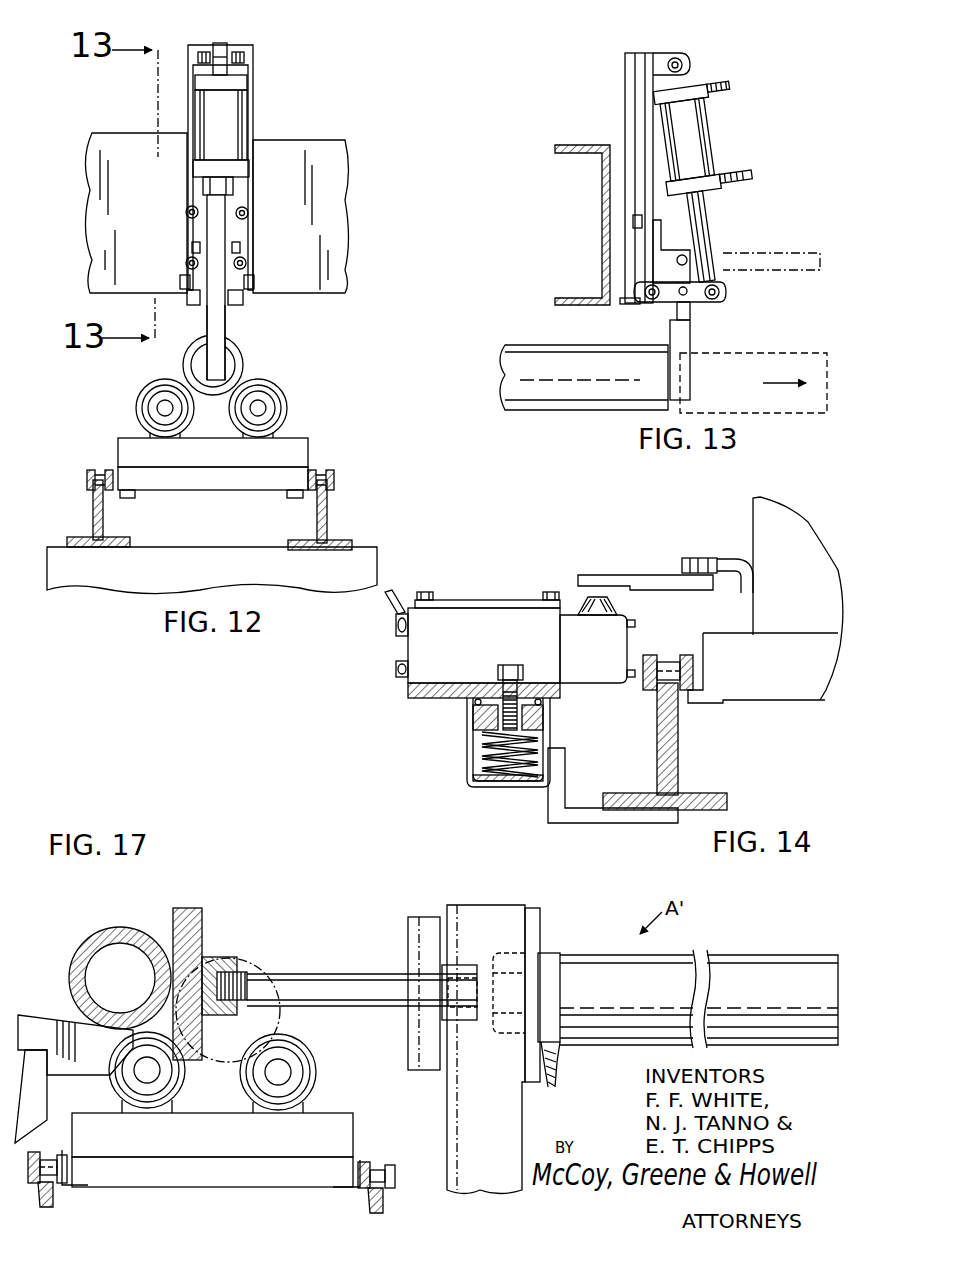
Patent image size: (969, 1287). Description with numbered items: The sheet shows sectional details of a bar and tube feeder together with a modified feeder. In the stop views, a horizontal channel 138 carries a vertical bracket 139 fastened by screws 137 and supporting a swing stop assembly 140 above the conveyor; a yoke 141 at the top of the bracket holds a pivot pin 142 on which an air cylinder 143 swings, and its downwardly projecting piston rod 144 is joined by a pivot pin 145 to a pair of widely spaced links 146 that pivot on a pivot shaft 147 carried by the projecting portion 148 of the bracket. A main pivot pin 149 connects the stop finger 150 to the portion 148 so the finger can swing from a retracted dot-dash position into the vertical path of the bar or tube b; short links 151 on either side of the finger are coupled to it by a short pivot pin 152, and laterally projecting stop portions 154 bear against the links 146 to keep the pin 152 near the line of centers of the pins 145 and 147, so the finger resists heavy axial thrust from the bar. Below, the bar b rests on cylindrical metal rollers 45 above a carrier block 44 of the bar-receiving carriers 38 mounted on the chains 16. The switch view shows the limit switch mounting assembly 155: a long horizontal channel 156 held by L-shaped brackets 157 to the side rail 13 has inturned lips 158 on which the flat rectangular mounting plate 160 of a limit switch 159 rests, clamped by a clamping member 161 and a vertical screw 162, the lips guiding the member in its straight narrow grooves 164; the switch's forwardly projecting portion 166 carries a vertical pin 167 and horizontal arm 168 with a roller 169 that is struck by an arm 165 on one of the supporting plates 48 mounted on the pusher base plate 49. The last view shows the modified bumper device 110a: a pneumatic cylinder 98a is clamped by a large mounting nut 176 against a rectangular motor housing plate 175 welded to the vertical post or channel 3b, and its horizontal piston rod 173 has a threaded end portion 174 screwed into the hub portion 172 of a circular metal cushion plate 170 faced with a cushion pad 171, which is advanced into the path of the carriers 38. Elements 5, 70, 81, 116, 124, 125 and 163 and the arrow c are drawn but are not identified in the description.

In FIG. 12, the base 5 is at (179, 548).
In FIG. 12, the side rail 13 is at (93, 520).
In FIG. 14, the side rail 13 is at (679, 760).
In FIG. 17, the side rail 13 is at (54, 1200).
In FIG. 12, the chain 16 is at (327, 480).
In FIG. 14, the chain 16 is at (643, 691).
In FIG. 17, the chain 16 is at (58, 1152).
In FIG. 17, the bar-receiving carrier 38 is at (229, 1125).
In FIG. 12, the carrier block 44 is at (213, 491).
In FIG. 17, the carrier block 44 is at (266, 1181).
In FIG. 12, the cylindrical metal roller 45 is at (226, 408).
In FIG. 17, the cylindrical metal roller 45 is at (225, 1091).
In FIG. 14, the supporting plate 48 is at (762, 504).
In FIG. 14, the base plate 49 is at (778, 693).
In FIG. 17, the guide plate 70 is at (44, 1093).
In FIG. 17, the plate 81 is at (63, 1020).
In FIG. 12, the support plate 116 is at (126, 450).
In FIG. 12, the roller 124 is at (142, 432).
In FIG. 17, the roller 124 is at (166, 1110).
In FIG. 12, the roller hub 125 is at (266, 410).
In FIG. 17, the roller hub 125 is at (152, 1075).
In FIG. 12, the screw 137 is at (186, 262).
In FIG. 13, the screw 137 is at (632, 228).
In FIG. 12, the horizontal channel 138 is at (345, 180).
In FIG. 13, the horizontal channel 138 is at (604, 211).
In FIG. 12, the vertical bracket 139 is at (253, 110).
In FIG. 13, the vertical bracket 139 is at (625, 75).
In FIG. 12, the swing stop assembly 140 is at (199, 193).
In FIG. 13, the swing stop assembly 140 is at (662, 165).
In FIG. 12, the yoke 141 is at (219, 43).
In FIG. 13, the yoke 141 is at (666, 57).
In FIG. 12, the pivot pin 142 is at (245, 57).
In FIG. 13, the pivot pin 142 is at (684, 63).
In FIG. 12, the air cylinder 143 is at (231, 124).
In FIG. 13, the air cylinder 143 is at (713, 150).
In FIG. 12, the piston rod 144 is at (228, 228).
In FIG. 13, the piston rod 144 is at (713, 220).
In FIG. 13, the pivot pin 145 is at (727, 292).
In FIG. 12, the link 146 is at (183, 279).
In FIG. 13, the link 146 is at (660, 301).
In FIG. 13, the pivot shaft 147 is at (640, 303).
In FIG. 13, the projecting portion 148 is at (673, 248).
In FIG. 12, the main pivot pin 149 is at (241, 246).
In FIG. 13, the main pivot pin 149 is at (711, 250).
In FIG. 12, the stop finger 150 is at (220, 370).
In FIG. 13, the stop finger 150 is at (690, 376).
In FIG. 12, the short link 151 is at (228, 322).
In FIG. 13, the short link 151 is at (695, 304).
In FIG. 13, the short pivot pin 152 is at (688, 304).
In FIG. 12, the stop portion 154 is at (188, 298).
In FIG. 13, the stop portion 154 is at (671, 323).
In FIG. 14, the limit switch mounting assembly 155 is at (404, 719).
In FIG. 14, the channel 156 is at (470, 757).
In FIG. 14, the L-shaped bracket 157 is at (567, 816).
In FIG. 14, the inturned lip 158 is at (495, 688).
In FIG. 14, the limit switch 159 is at (405, 640).
In FIG. 14, the mounting plate 160 is at (410, 690).
In FIG. 14, the clamping member 161 is at (475, 718).
In FIG. 14, the screw 162 is at (510, 665).
In FIG. 14, the spring 163 is at (476, 778).
In FIG. 14, the groove 164 is at (549, 725).
In FIG. 14, the arm 165 is at (740, 560).
In FIG. 14, the forwardly projecting portion 166 is at (608, 648).
In FIG. 14, the vertical pin 167 is at (597, 597).
In FIG. 14, the horizontal arm 168 is at (643, 576).
In FIG. 14, the roller 169 is at (705, 558).
In FIG. 17, the cushion plate 170 is at (205, 925).
In FIG. 17, the cushion pad 171 is at (173, 920).
In FIG. 17, the hub portion 172 is at (216, 960).
In FIG. 17, the piston rod 173 is at (362, 975).
In FIG. 17, the threaded end portion 174 is at (243, 975).
In FIG. 17, the motor housing plate 175 is at (541, 945).
In FIG. 17, the mounting nut 176 is at (510, 950).
In FIG. 17, the vertical post 3b is at (511, 905).
In FIG. 17, the pneumatic cylinder 98a is at (713, 955).
In FIG. 17, the bumper device 110a is at (284, 964).
In FIG. 12, the bar or tube b is at (241, 354).
In FIG. 13, the bar or tube b is at (537, 345).
In FIG. 17, the bar or tube b is at (94, 940).
In FIG. 17, the direction c is at (30, 1006).